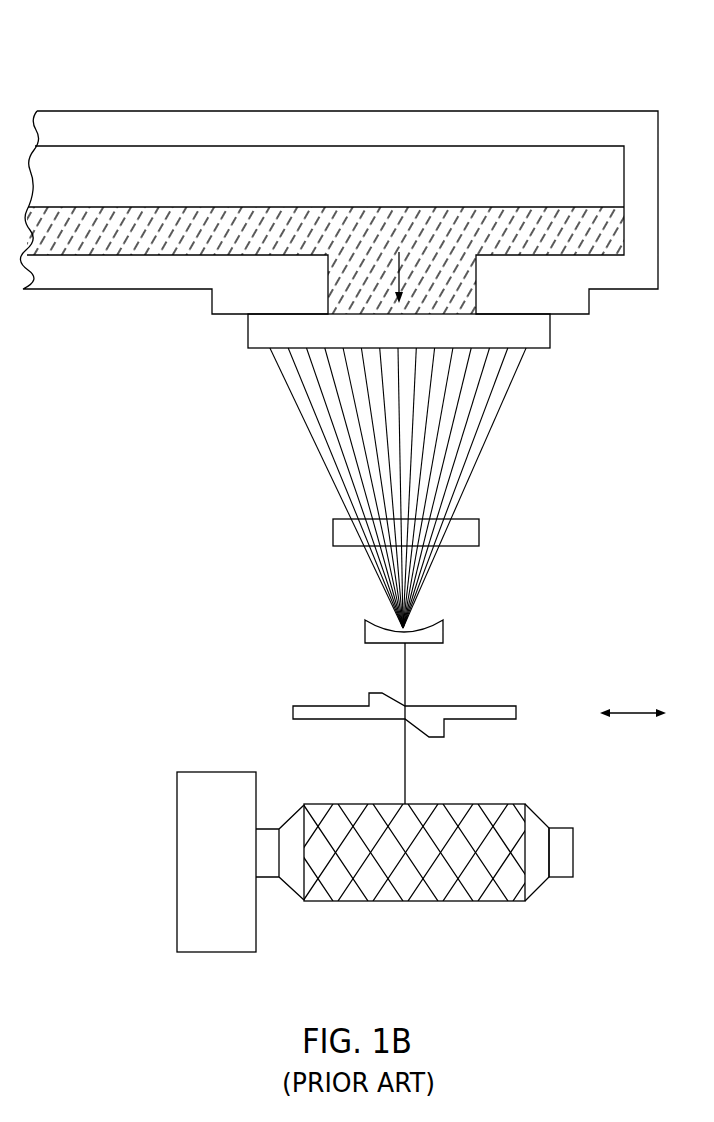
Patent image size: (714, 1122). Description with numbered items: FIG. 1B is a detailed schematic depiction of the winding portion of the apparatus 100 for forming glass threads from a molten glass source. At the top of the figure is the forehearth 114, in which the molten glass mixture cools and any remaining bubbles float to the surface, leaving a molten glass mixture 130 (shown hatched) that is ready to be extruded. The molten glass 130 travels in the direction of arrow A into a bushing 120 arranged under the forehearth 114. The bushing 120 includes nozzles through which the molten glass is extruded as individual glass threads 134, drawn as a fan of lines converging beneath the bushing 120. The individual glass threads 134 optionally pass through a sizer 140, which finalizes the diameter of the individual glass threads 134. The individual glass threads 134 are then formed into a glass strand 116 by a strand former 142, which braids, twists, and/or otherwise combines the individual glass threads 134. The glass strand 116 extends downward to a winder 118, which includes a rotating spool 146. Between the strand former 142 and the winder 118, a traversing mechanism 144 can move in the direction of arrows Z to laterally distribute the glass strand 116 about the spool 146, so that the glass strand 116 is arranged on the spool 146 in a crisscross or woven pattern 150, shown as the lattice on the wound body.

The apparatus 100 is at (401, 84).
The forehearth 114 is at (456, 162).
The molten glass mixture 130 is at (357, 297).
The bushing 120 is at (534, 331).
The individual glass threads 134 is at (316, 418).
The sizer 140 is at (479, 528).
The strand former 142 is at (443, 625).
The glass strand 116 is at (405, 680).
The traversing mechanism 144 is at (517, 710).
The winder 118 is at (178, 744).
The crisscross or woven pattern 150 is at (455, 822).
The rotating spool 146 is at (565, 840).